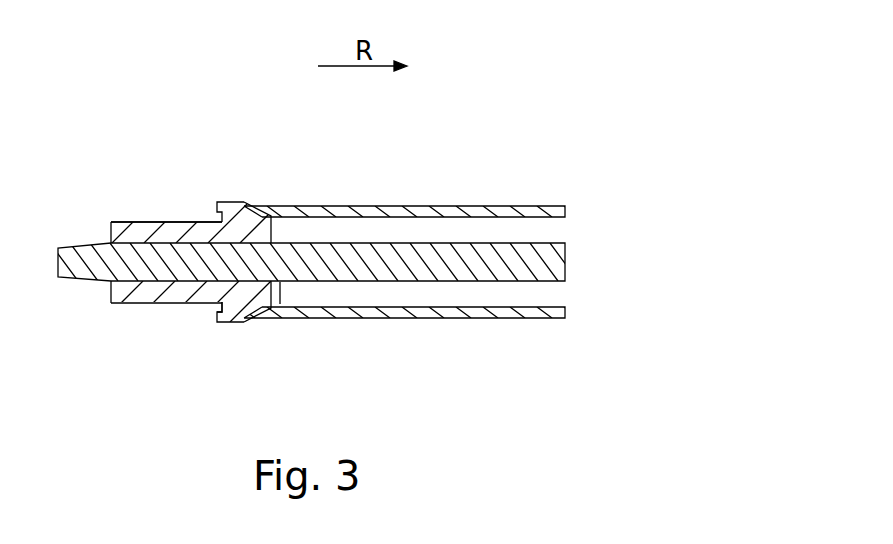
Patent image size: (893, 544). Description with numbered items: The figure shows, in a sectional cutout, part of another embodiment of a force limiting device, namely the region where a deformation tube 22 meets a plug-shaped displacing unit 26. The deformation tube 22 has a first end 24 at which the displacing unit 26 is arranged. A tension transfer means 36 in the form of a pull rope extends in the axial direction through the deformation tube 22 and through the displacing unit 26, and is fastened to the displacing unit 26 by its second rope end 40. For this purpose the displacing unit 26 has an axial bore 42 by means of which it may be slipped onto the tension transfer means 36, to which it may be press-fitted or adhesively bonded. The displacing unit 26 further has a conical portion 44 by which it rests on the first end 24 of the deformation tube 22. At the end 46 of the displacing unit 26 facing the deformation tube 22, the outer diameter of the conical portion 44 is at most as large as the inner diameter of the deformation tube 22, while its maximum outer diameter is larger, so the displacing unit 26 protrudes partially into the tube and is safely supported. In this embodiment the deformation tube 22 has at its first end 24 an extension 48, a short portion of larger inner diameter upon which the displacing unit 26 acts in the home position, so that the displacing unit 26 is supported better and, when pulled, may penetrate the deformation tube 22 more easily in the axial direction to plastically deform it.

The deformation tube 22 is at (430, 318).
The first end 24 is at (227, 324).
The displacing unit 26 is at (143, 303).
The tension transfer means 36 is at (483, 263).
The second rope end 40 is at (81, 278).
The axial bore 42 is at (168, 222).
The conical portion 44 is at (257, 327).
The end of the displacing unit 46 is at (280, 241).
The extension 48 is at (238, 203).